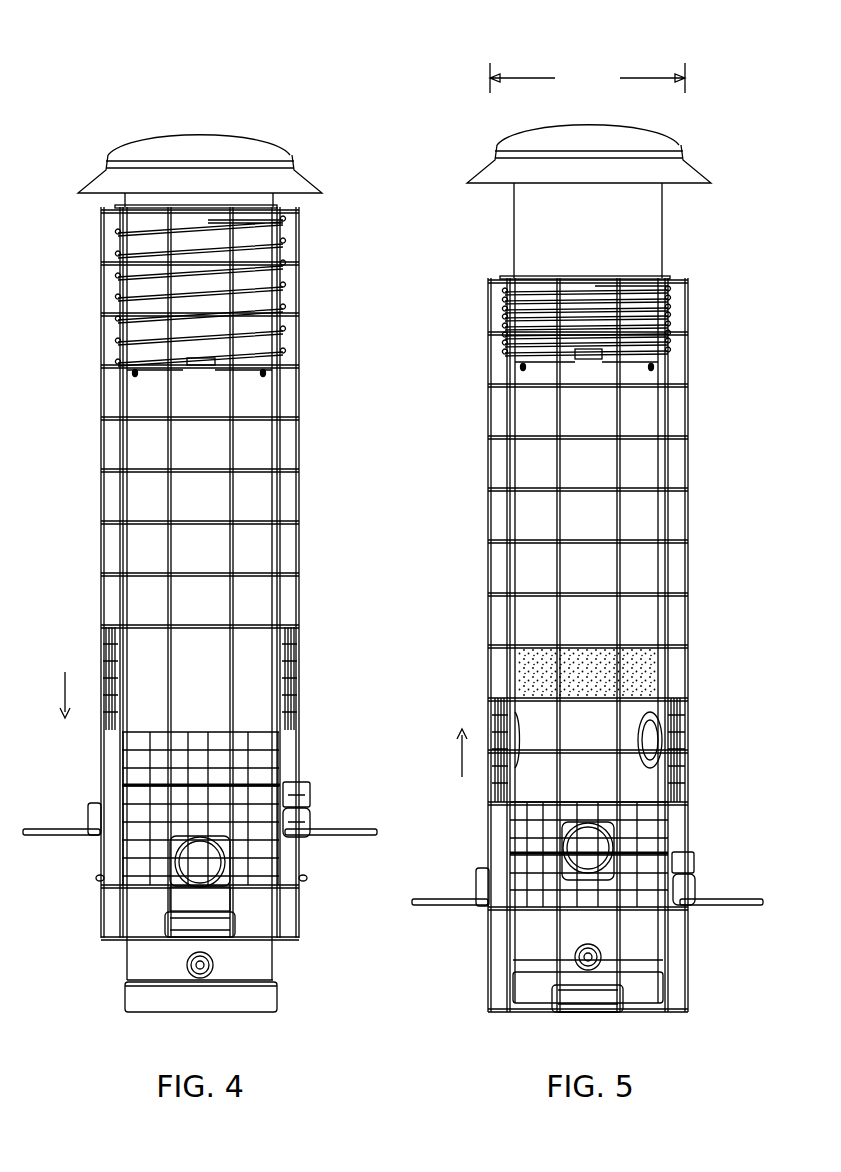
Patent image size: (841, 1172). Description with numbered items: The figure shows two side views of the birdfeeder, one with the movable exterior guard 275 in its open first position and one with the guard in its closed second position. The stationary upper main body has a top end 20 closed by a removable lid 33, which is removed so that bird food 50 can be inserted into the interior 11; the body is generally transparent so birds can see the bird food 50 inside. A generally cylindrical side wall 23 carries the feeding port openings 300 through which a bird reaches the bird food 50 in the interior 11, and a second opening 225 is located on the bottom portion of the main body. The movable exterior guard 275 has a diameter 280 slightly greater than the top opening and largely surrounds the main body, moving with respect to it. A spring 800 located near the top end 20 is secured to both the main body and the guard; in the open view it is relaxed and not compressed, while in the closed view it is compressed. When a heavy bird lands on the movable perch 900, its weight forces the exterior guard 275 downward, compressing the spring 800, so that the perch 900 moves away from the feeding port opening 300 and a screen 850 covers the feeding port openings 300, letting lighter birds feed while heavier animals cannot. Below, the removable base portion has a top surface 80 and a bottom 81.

In FIG. 4, the top end 20 is at (213, 153).
In FIG. 4, the removable lid 33 is at (158, 139).
In FIG. 5, the removable lid 33 is at (620, 128).
In FIG. 5, the side wall 23 is at (645, 236).
In FIG. 5, the interior 11 is at (637, 413).
In FIG. 4, the spring 800 is at (265, 286).
In FIG. 5, the spring 800 is at (522, 305).
In FIG. 4, the movable exterior guard 275 is at (300, 420).
In FIG. 5, the movable exterior guard 275 is at (688, 513).
In FIG. 4, the screen 850 is at (218, 748).
In FIG. 4, the movable perch 900 is at (350, 831).
In FIG. 4, the feeding port opening 300 is at (192, 863).
In FIG. 5, the feeding port opening 300 is at (590, 847).
In FIG. 4, the second opening 225 is at (187, 965).
In FIG. 5, the diameter 280 is at (587, 78).
In FIG. 5, the bird food 50 is at (635, 657).
In FIG. 5, the top surface 80 is at (688, 958).
In FIG. 5, the bottom 81 is at (643, 1013).